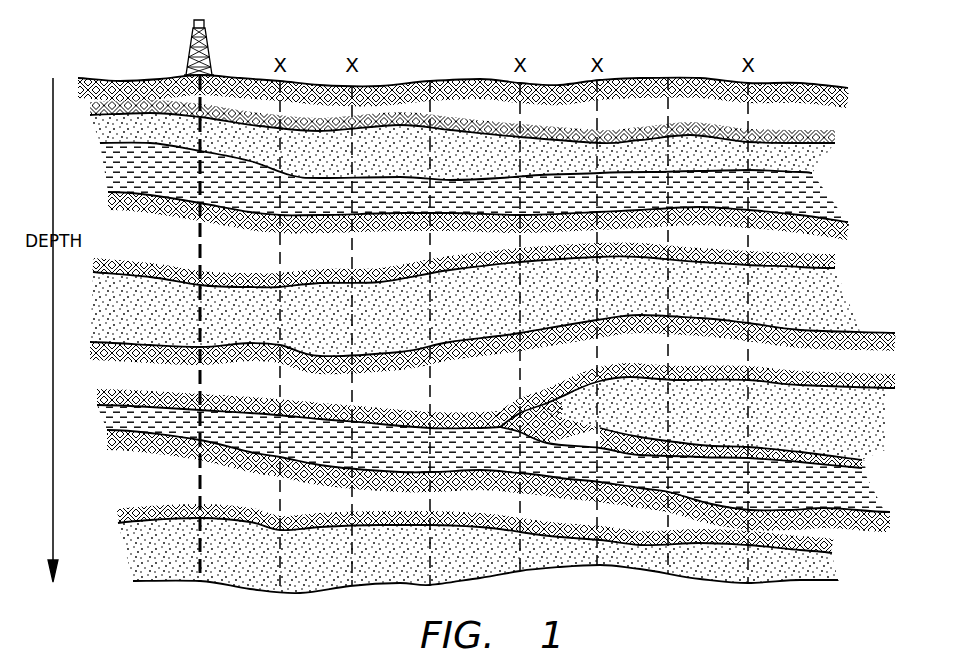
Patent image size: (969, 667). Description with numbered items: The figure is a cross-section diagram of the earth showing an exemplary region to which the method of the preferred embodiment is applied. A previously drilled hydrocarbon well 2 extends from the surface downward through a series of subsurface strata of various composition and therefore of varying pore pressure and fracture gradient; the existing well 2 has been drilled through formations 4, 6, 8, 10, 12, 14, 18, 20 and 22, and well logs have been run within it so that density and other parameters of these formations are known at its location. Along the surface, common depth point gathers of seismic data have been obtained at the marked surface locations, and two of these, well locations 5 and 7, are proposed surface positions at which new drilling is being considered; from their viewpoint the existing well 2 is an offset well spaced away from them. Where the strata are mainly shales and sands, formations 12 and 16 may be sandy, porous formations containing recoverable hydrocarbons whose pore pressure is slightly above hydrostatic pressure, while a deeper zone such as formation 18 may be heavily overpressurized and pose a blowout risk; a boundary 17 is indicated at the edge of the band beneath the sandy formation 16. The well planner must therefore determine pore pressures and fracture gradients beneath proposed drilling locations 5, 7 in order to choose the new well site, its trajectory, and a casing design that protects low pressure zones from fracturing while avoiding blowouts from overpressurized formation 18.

The hydrocarbon well 2 is at (190, 36).
The formation 4 is at (700, 119).
The well location 5 is at (430, 72).
The formation 6 is at (465, 167).
The well location 7 is at (668, 68).
The formation 8 is at (231, 195).
The formation 10 is at (226, 257).
The formation 12 is at (460, 317).
The formation 14 is at (460, 402).
The formation 16 is at (697, 421).
The formation boundary 17 is at (862, 468).
The formation 18 is at (460, 464).
The formation 20 is at (226, 500).
The formation 22 is at (460, 567).